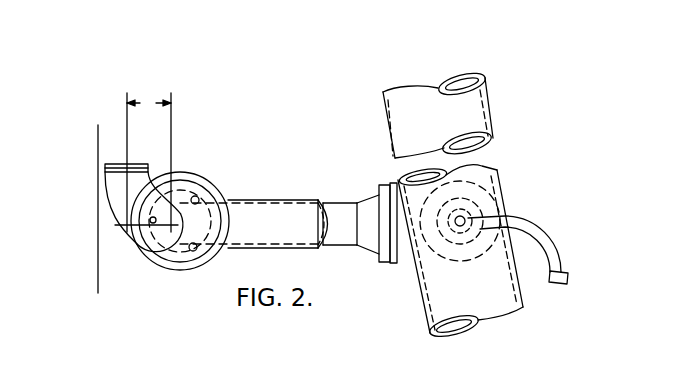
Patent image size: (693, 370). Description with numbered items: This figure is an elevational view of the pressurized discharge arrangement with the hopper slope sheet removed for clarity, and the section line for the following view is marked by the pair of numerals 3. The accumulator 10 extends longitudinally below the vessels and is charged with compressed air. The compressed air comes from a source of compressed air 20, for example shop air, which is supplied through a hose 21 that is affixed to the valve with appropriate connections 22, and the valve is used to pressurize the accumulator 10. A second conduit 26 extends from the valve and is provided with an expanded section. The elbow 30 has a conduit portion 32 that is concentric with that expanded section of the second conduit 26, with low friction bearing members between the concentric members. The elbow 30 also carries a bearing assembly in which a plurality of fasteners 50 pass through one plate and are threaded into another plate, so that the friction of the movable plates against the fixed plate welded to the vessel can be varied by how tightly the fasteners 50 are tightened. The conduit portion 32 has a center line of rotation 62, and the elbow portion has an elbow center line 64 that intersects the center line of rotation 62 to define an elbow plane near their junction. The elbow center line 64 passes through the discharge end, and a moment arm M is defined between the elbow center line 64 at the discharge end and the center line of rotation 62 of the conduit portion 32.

The section line 3- 3 is at (130, 138).
The accumulator 10 is at (498, 109).
The source of compressed air 20 is at (576, 270).
The hose 21 is at (551, 240).
The connections 22 is at (474, 202).
The second conduit 26 is at (344, 212).
The elbow 30 is at (152, 173).
The conduit portion 32 is at (252, 200).
The fasteners 50 is at (190, 253).
The center line of rotation 62 is at (152, 241).
The elbow center line 64 is at (127, 95).